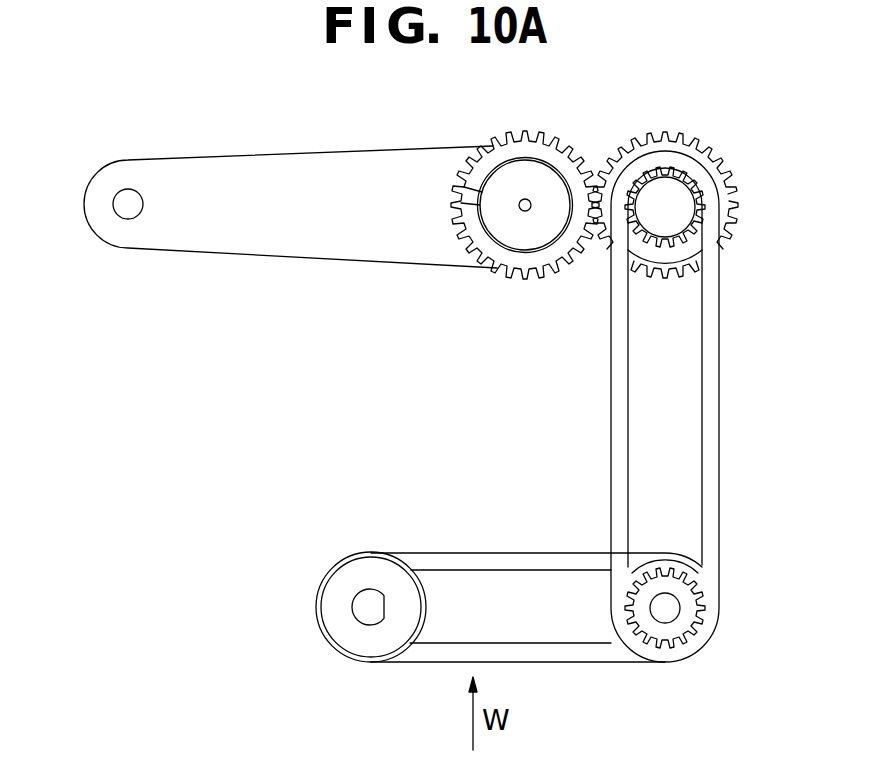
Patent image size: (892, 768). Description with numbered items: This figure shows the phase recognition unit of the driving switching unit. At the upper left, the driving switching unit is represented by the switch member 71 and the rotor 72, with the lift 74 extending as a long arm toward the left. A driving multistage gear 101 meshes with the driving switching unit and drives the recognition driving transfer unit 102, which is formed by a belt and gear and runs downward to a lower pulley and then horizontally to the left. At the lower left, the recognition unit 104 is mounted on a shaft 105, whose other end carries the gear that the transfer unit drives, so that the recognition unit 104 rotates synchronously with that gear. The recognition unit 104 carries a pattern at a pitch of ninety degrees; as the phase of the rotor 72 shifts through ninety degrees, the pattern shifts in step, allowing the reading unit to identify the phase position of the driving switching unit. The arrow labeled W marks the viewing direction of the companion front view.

The switch member 71 is at (528, 186).
The rotor 72 is at (530, 258).
The lift 74 is at (378, 228).
The driving multistage gear 101 is at (680, 136).
The recognition driving transfer unit 102 is at (710, 432).
The recognition unit 104 is at (333, 623).
The shaft 105 is at (370, 600).